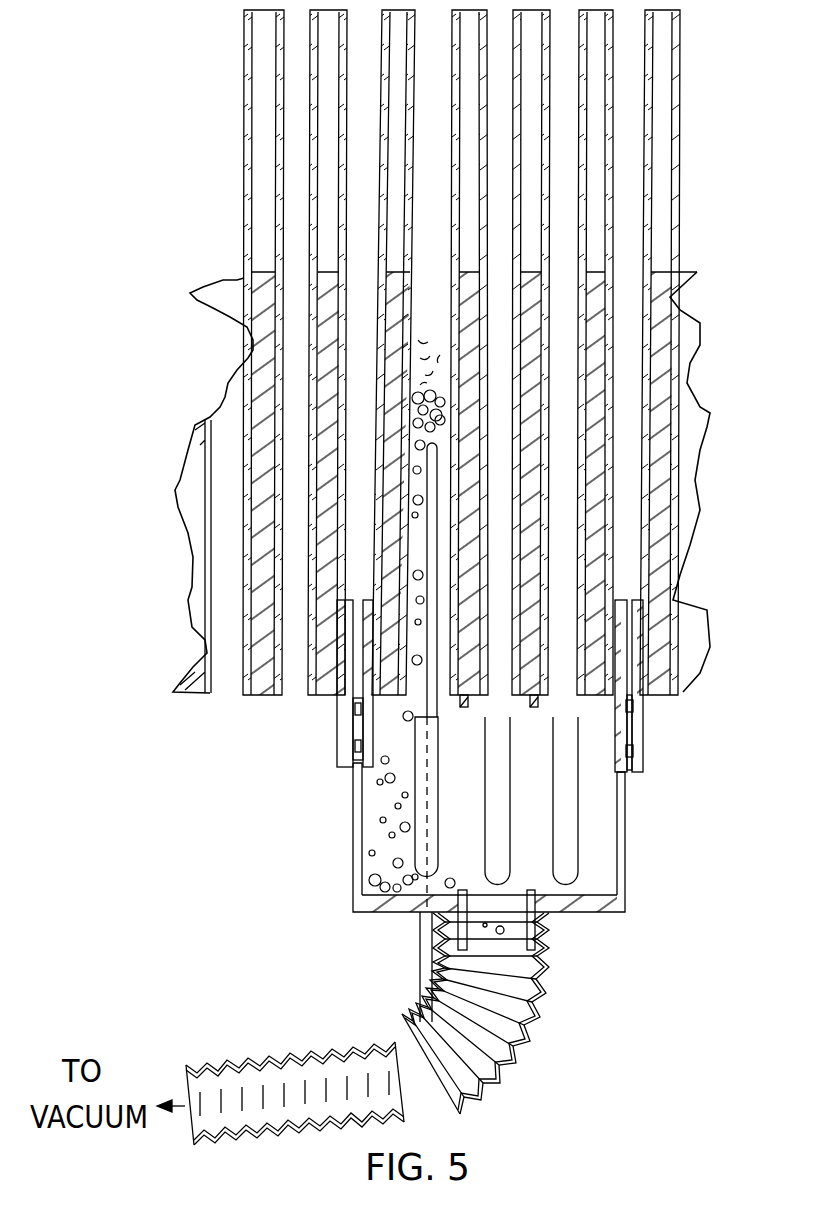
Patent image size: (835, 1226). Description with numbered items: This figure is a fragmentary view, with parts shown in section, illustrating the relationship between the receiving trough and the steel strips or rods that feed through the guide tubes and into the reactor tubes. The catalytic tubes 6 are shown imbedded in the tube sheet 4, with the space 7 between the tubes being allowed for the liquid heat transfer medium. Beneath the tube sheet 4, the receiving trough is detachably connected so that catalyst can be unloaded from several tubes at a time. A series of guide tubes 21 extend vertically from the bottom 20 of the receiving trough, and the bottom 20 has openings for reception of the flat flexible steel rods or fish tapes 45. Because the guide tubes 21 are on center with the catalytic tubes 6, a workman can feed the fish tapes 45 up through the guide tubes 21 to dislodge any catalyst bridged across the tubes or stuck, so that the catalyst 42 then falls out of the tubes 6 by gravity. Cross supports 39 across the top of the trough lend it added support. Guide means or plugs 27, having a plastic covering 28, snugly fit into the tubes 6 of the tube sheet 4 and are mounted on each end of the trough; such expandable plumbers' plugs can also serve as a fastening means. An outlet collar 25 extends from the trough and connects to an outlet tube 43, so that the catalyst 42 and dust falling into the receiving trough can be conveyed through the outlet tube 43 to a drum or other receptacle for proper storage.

The tube sheet 4 is at (262, 698).
The catalytic tubes 6 is at (572, 189).
The space between the tubes 7 is at (270, 210).
The bottom 20 is at (400, 913).
The guide tubes 21 is at (567, 793).
The outlet collar 25 is at (522, 922).
The guide plugs 27 is at (640, 715).
The plastic covering 28 is at (650, 600).
The cross supports 39 is at (468, 699).
The catalyst 42 is at (437, 397).
The outlet tube 43 is at (528, 1018).
The fish tapes 45 is at (430, 697).